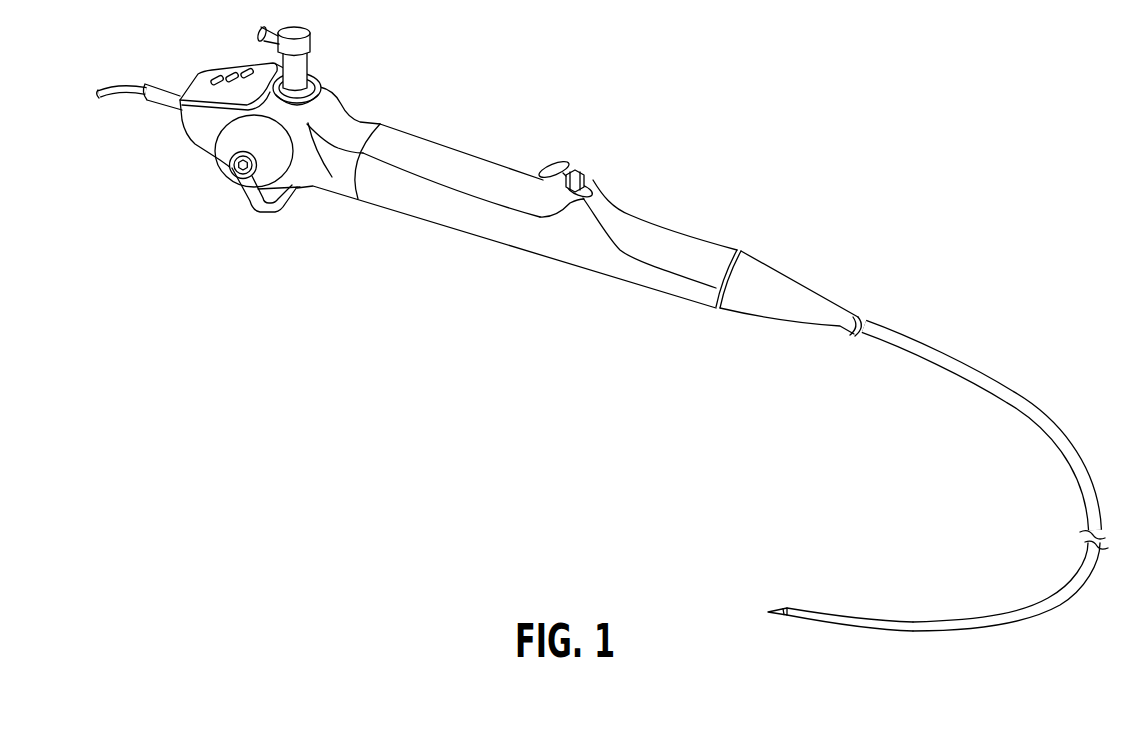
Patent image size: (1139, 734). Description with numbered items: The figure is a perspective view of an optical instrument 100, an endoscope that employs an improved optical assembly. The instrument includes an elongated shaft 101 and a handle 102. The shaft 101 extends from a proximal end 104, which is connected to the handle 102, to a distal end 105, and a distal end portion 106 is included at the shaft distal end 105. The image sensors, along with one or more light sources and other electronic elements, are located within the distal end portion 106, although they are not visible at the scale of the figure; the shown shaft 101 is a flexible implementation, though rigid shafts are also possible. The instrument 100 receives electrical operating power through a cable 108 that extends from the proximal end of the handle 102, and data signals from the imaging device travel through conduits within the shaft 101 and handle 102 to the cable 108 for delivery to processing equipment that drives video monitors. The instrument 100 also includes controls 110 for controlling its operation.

The optical instrument 100 is at (527, 121).
The elongated shaft 101 is at (957, 362).
The handle 102 is at (430, 146).
The proximal end 104 is at (888, 300).
The distal end 105 is at (799, 592).
The distal end portion 106 is at (778, 609).
The cable 108 is at (118, 84).
The controls 110 is at (226, 60).